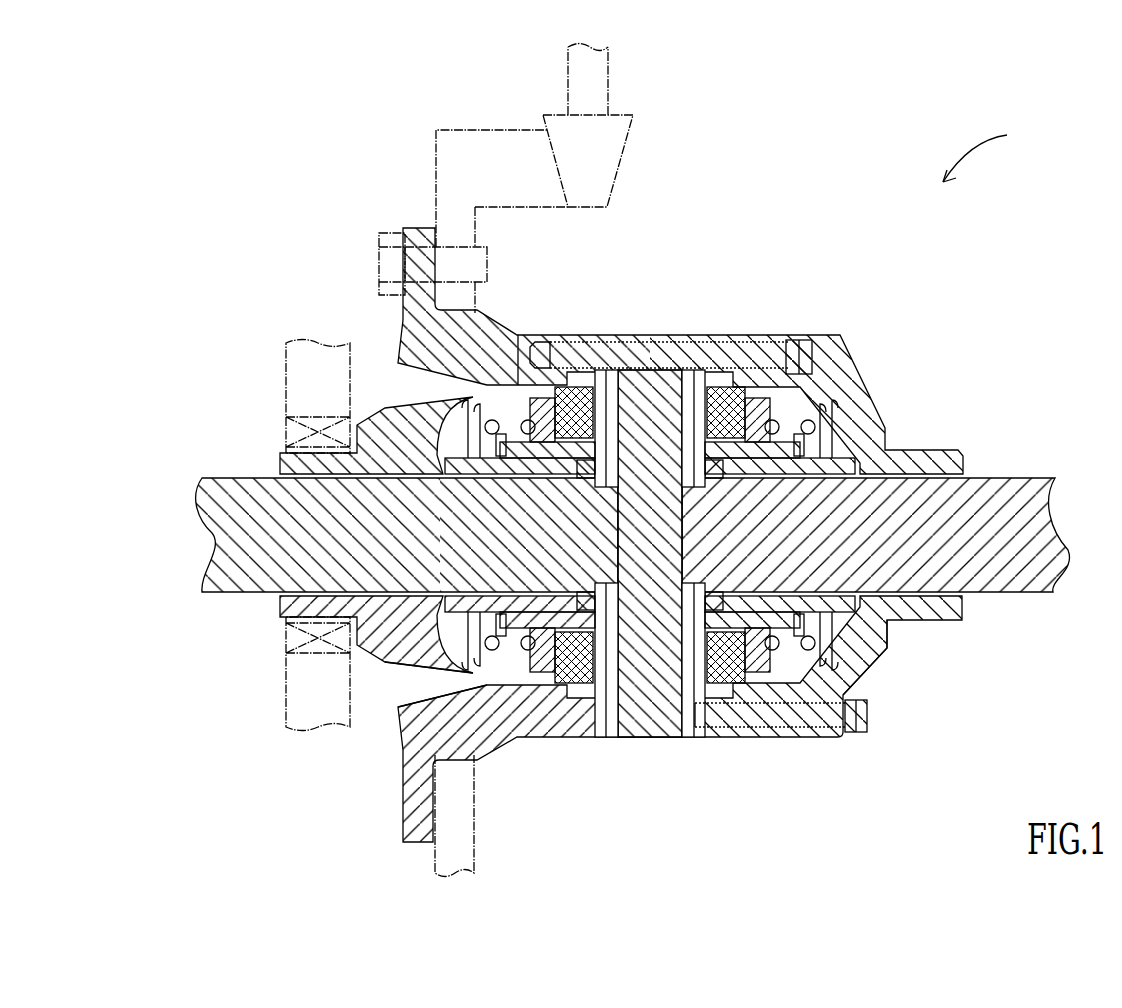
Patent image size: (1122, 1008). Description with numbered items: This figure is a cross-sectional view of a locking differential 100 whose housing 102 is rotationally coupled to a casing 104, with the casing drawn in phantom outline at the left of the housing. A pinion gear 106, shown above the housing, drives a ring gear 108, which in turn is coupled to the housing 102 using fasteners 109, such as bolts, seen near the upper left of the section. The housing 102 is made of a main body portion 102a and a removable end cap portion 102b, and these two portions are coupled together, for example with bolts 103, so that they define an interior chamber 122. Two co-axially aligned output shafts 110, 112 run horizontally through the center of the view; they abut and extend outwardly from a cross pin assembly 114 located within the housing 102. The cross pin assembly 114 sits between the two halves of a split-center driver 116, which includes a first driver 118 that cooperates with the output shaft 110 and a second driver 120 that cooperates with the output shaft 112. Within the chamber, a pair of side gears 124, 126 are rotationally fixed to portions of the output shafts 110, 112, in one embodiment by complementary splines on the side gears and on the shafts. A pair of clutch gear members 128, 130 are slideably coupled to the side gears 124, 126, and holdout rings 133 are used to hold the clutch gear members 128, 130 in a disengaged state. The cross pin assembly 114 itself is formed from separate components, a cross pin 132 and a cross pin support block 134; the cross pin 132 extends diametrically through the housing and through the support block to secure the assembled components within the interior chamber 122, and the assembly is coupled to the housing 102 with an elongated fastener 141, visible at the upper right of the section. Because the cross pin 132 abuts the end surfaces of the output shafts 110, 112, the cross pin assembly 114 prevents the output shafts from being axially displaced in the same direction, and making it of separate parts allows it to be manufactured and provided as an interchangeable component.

The locking differential 100 is at (995, 151).
The housing 102 is at (530, 335).
The main body portion 102a is at (395, 333).
The removable end cap portion 102b is at (860, 418).
The bolts 103 is at (840, 737).
The casing 104 is at (285, 373).
The pinion gear 106 is at (622, 165).
The ring gear 108 is at (493, 128).
The fasteners 109 is at (488, 262).
The output shaft 110 is at (243, 473).
The output shaft 112 is at (1022, 585).
The cross pin assembly 114 is at (647, 717).
The split-center driver 116 is at (763, 740).
The first driver 118 is at (597, 335).
The second driver 120 is at (740, 333).
The interior chamber 122 is at (400, 708).
The side gear 124 is at (385, 660).
The side gear 126 is at (887, 648).
The clutch gear member 128 is at (528, 643).
The clutch gear member 130 is at (795, 740).
The cross pin 132 is at (650, 372).
The holdout rings 133 is at (803, 657).
The cross pin support block 134 is at (697, 335).
The elongated fastener 141 is at (813, 347).